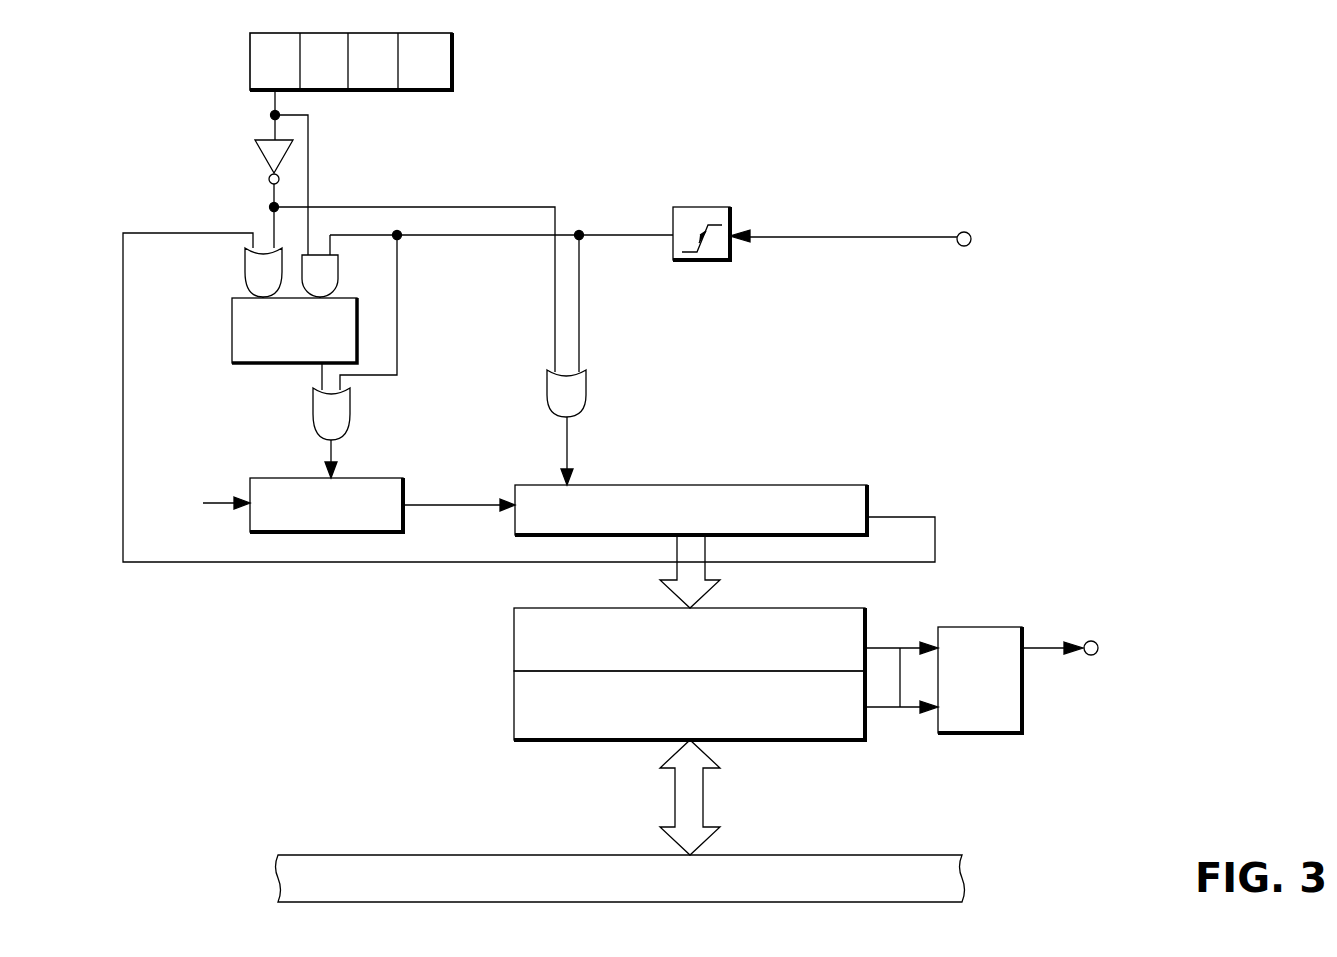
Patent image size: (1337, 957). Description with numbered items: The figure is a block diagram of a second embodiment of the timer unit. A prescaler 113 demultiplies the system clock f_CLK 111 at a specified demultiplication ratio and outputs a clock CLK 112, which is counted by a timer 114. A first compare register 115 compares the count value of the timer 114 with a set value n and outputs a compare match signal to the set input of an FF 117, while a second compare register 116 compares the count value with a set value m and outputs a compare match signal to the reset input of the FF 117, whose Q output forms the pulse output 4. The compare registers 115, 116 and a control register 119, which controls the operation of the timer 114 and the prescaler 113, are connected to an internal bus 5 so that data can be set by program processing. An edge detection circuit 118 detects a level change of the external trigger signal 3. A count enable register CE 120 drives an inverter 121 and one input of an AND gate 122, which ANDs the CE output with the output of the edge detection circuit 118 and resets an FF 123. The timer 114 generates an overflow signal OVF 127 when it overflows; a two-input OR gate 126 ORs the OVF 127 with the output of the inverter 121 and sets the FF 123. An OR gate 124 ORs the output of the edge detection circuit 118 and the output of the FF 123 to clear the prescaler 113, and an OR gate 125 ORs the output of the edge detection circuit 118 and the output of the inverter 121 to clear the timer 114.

The external trigger signal 3 is at (962, 230).
The pulse output 4 is at (1092, 640).
The internal bus 5 is at (905, 877).
The system clock 111 is at (228, 502).
The clock CLK 112 is at (448, 510).
The prescaler 113 is at (393, 477).
The timer 114 is at (790, 490).
The first compare register 115 is at (514, 644).
The second compare register 116 is at (514, 700).
The FF 117 is at (990, 627).
The edge detection circuit 118 is at (705, 207).
The control register 119 is at (452, 62).
The count enable register CE 120 is at (268, 107).
The inverter 121 is at (262, 152).
The AND gate 122 is at (337, 270).
The FF 123 is at (257, 363).
The OR gate 124 is at (350, 418).
The OR gate 125 is at (586, 395).
The OR gate 126 is at (245, 270).
The overflow signal OVF 127 is at (935, 542).